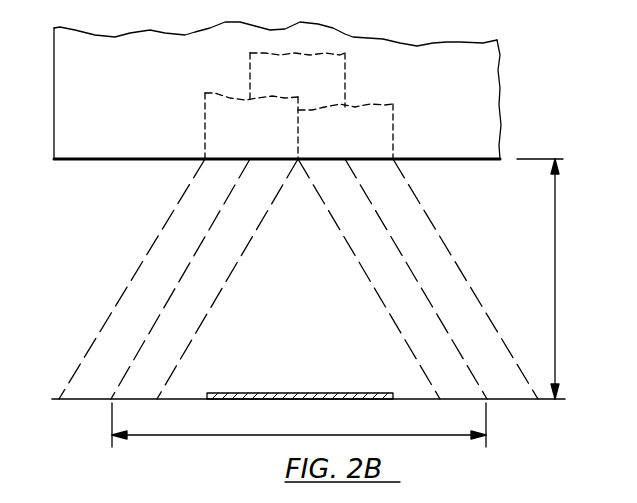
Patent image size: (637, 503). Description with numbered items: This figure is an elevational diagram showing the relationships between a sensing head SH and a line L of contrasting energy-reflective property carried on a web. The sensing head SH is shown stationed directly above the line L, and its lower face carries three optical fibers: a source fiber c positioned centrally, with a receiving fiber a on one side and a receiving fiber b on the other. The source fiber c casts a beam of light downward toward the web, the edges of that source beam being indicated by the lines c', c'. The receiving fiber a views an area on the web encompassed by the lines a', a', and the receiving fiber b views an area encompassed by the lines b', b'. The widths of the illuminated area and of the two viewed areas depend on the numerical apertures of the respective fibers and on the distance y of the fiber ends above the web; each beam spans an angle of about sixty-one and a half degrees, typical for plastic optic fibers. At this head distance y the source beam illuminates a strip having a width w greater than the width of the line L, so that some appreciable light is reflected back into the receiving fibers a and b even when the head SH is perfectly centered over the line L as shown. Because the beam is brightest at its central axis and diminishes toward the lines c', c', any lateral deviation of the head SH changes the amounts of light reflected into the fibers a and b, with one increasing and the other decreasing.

The sensing head SH is at (501, 92).
The receiving fiber a is at (229, 126).
The receiving fiber b is at (363, 120).
The source fiber c is at (282, 74).
The lines bounding area viewed by receiving fiber a a' is at (249, 279).
The lines bounding area viewed by receiving fiber b b' is at (347, 279).
The edges of the source beam c' is at (299, 279).
The line L is at (306, 392).
The distance of fiber ends above web y is at (543, 279).
The width of illuminated strip area w is at (299, 425).